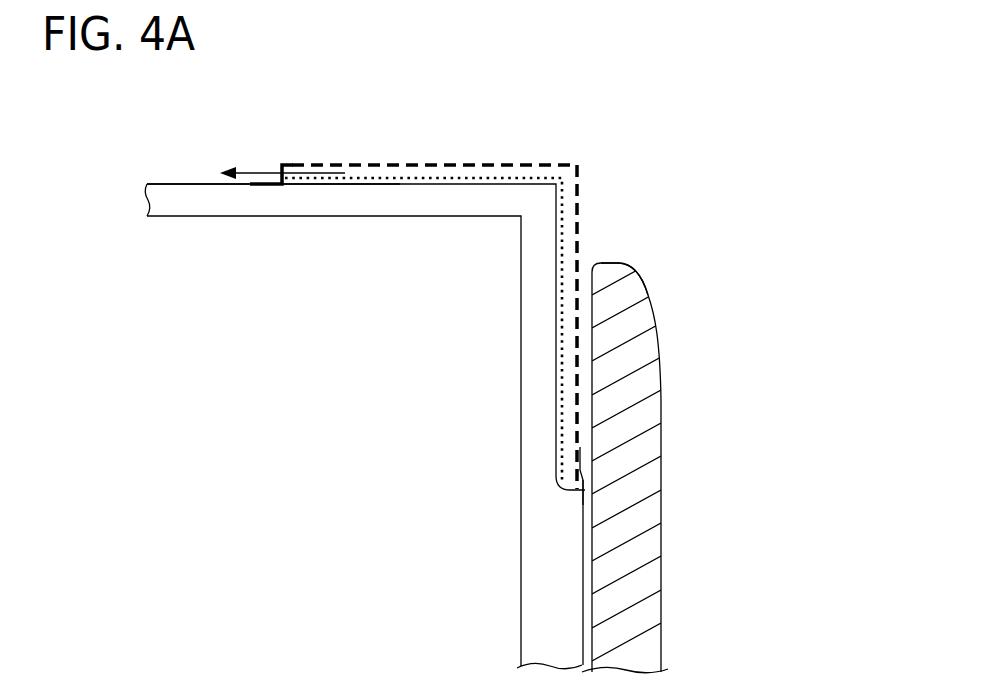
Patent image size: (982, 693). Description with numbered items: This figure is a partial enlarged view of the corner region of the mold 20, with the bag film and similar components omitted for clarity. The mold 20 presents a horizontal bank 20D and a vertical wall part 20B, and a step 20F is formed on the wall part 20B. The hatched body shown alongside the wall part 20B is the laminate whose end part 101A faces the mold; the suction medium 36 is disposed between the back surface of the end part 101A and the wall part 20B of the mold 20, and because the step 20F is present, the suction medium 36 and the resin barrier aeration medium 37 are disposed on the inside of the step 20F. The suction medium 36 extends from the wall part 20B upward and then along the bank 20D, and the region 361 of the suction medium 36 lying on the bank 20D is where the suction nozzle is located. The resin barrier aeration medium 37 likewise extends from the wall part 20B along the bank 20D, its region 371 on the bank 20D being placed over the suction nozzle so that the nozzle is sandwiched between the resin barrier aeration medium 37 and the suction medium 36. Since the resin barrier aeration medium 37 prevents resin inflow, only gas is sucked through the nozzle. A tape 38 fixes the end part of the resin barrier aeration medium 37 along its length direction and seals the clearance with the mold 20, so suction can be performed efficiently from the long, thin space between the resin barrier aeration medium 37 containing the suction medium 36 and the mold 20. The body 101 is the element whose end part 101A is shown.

The mold 20 is at (508, 565).
The bank 20D is at (180, 184).
The wall part 20B is at (583, 627).
The step 20F is at (628, 428).
The suction medium 36 is at (558, 402).
The region of the suction medium 361 is at (437, 176).
The resin barrier aeration medium 37 is at (580, 230).
The region of the resin barrier aeration medium 371 is at (507, 163).
The tape 38 is at (283, 163).
The frame body 101 is at (672, 549).
The end part 101A is at (645, 297).